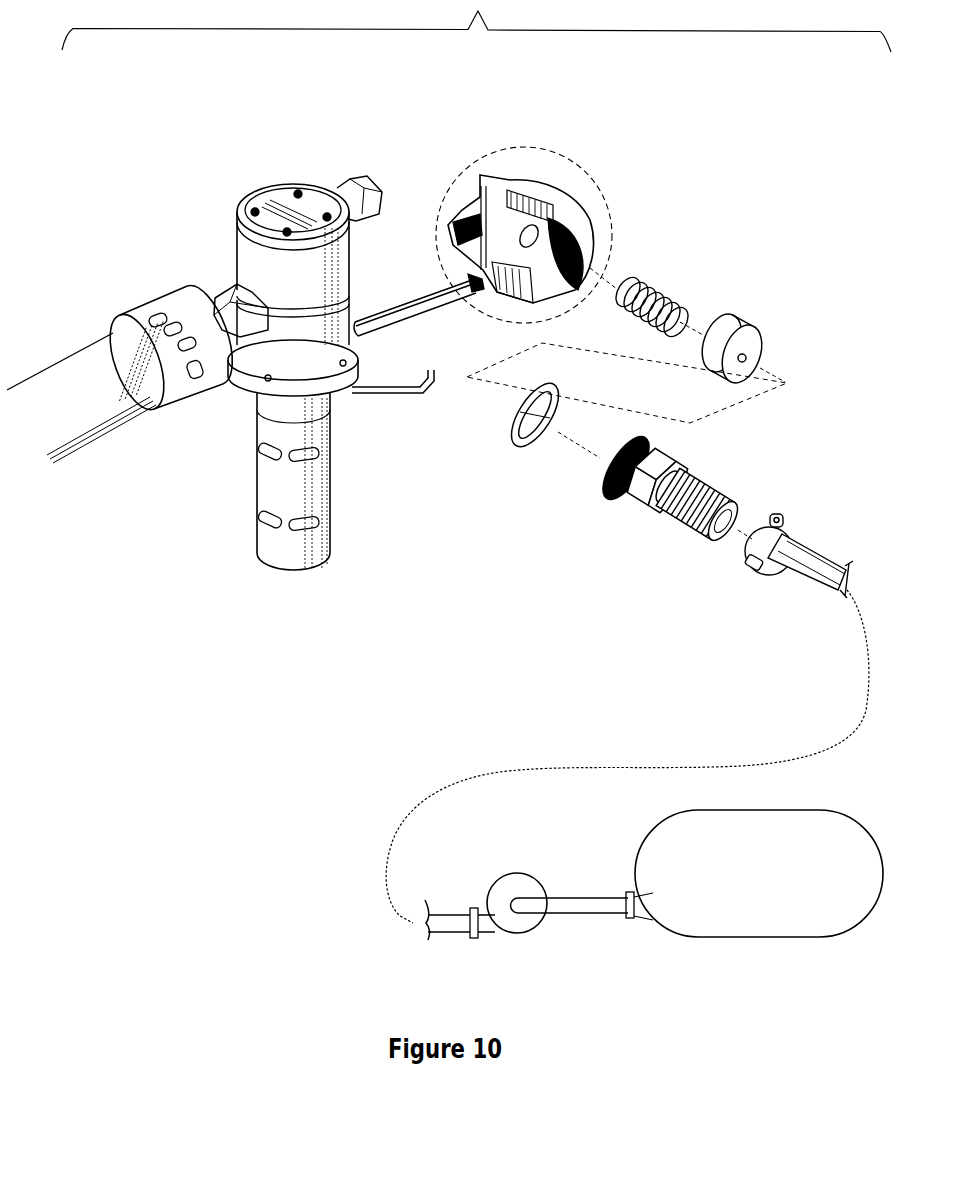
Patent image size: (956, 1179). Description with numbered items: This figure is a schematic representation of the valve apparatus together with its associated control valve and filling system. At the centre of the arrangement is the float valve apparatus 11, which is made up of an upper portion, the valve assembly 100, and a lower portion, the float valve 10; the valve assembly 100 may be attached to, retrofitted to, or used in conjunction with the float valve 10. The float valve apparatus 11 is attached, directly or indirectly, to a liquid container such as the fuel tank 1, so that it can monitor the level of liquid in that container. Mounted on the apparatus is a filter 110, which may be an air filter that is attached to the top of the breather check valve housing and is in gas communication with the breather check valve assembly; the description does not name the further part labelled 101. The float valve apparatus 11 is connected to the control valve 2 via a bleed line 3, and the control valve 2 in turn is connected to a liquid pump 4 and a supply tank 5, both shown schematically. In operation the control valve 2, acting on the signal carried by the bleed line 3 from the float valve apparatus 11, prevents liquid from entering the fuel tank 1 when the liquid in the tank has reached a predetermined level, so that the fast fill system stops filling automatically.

The fuel tank 1 is at (60, 320).
The control valve 2 is at (585, 150).
The bleed line 3 is at (430, 312).
The liquid pump 4 is at (520, 927).
The supply tank 5 is at (756, 882).
The float valve 10 is at (392, 522).
The float valve apparatus 11 is at (173, 497).
The valve assembly 100 is at (198, 245).
The cover 101 is at (235, 162).
The filter 110 is at (108, 283).